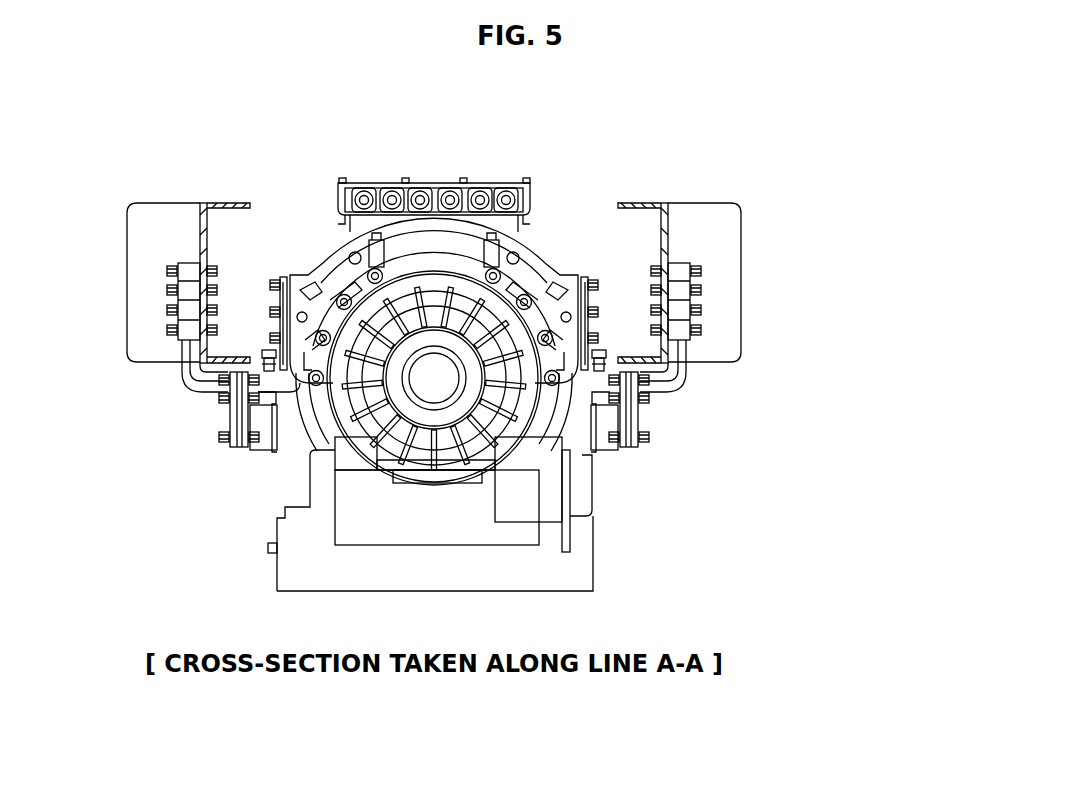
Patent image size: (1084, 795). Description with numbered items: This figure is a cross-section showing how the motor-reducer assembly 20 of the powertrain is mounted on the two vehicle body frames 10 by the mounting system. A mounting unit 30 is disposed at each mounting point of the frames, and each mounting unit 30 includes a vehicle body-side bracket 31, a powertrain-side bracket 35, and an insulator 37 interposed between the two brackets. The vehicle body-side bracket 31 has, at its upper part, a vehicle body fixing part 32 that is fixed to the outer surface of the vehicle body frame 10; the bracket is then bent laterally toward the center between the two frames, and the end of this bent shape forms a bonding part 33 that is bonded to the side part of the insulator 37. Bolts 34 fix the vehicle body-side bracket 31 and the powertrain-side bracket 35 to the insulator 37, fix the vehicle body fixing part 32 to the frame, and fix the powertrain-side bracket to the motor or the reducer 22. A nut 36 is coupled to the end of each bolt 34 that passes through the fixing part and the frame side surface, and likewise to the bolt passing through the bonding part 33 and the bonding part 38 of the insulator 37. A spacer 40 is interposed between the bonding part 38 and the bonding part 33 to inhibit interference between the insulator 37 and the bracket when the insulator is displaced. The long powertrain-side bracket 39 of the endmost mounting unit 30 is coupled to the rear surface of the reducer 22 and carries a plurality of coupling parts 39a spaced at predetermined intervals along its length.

The vehicle body frame 10 is at (158, 203).
The motor-reducer assembly 20 is at (557, 248).
The reducer 22 is at (444, 238).
The mounting unit 30 is at (423, 365).
The vehicle body-side bracket 31 is at (176, 388).
The vehicle body fixing part 32 is at (185, 332).
The bonding part 33 is at (238, 450).
The bolt 34 is at (207, 266).
The powertrain-side bracket 35 is at (292, 275).
The nut 36 is at (168, 272).
The insulator 37 is at (300, 470).
The bonding part 38 is at (250, 450).
The powertrain-side bracket 39 is at (352, 252).
The coupling part 39a is at (375, 268).
The spacer 40 is at (243, 450).